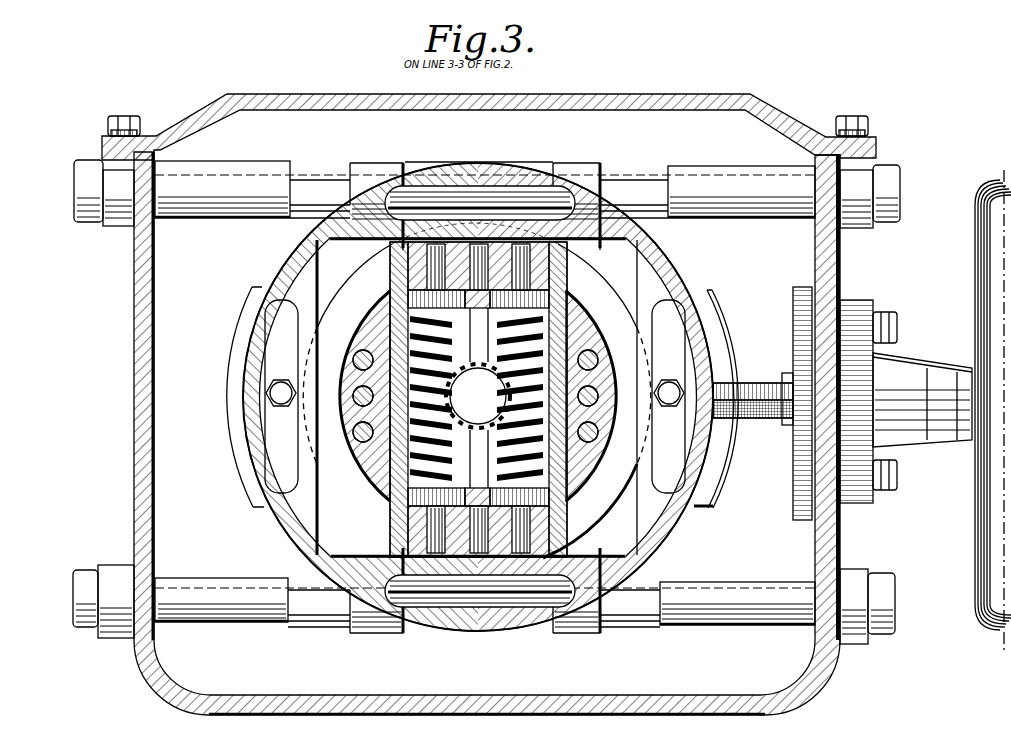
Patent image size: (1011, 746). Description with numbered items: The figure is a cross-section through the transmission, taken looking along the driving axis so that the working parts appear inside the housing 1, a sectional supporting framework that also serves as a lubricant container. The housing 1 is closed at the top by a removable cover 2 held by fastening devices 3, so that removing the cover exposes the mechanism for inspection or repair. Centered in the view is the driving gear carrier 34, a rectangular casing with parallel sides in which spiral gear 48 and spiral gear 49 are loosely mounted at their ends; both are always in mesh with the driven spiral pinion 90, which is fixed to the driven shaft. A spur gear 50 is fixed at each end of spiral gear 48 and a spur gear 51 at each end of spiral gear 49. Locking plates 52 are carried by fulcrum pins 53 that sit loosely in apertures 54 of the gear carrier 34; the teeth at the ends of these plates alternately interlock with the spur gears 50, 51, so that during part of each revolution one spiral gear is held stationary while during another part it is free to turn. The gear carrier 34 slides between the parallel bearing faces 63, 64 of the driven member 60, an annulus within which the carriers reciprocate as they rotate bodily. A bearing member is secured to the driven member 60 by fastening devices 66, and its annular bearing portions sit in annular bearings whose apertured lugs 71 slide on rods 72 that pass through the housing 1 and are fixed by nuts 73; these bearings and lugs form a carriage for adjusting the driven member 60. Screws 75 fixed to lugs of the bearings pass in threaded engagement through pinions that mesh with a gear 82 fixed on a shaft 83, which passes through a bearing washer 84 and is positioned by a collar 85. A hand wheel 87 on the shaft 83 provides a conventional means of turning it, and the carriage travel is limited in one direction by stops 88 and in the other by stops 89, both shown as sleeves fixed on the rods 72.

The housing 1 is at (134, 308).
The removable cover 2 is at (768, 100).
The fastening devices 3 is at (128, 118).
The driving gear carrier 34 is at (540, 268).
The spiral gear 48 is at (428, 464).
The spiral gear 49 is at (592, 298).
The spur gear 50 is at (390, 301).
The spur gear 51 is at (550, 297).
The locking plates 52 is at (460, 310).
The fulcrum pins 53 is at (490, 205).
The apertures 54 is at (470, 246).
The driven member 60 is at (670, 540).
The bearing face 63 is at (620, 246).
The bearing face 64 is at (590, 553).
The fastening devices 66 is at (279, 385).
The apertured lugs 71 is at (375, 162).
The rods 72 is at (640, 183).
The nuts 73 is at (888, 172).
The screws 75 is at (755, 420).
The gear 82 is at (793, 505).
The shaft 83 is at (960, 378).
The bearing washer 84 is at (908, 455).
The collar 85 is at (930, 447).
The hand wheel 87 is at (973, 522).
The stops 88 is at (213, 220).
The stops 89 is at (752, 218).
The driven spiral pinion 90 is at (478, 370).